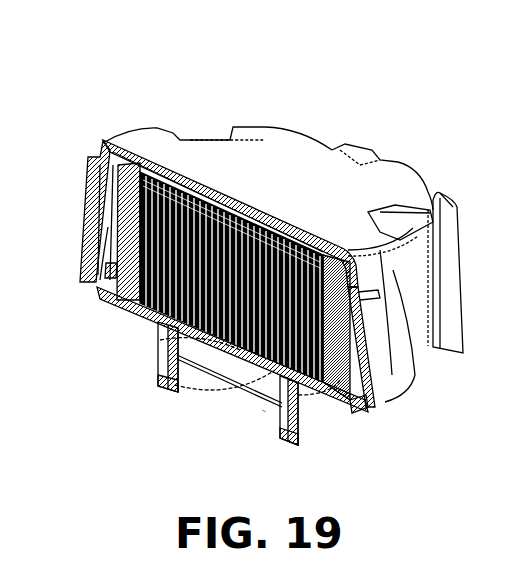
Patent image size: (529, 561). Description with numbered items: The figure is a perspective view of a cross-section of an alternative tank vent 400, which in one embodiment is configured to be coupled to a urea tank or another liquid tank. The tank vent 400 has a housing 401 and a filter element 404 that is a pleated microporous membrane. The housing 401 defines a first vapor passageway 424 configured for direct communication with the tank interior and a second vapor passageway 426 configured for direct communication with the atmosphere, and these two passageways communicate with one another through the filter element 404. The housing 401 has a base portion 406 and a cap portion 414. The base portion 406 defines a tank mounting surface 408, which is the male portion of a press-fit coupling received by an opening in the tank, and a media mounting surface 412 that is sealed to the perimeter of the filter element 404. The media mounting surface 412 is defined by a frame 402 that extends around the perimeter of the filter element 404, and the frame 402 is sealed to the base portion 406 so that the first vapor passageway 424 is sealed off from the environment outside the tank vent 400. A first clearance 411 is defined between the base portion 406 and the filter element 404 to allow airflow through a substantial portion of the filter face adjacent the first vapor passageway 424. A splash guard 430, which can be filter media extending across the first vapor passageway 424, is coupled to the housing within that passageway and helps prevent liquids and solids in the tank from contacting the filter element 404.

The tank vent 400 is at (198, 42).
The housing 401 is at (428, 192).
The frame 402 is at (355, 333).
The filter element 404 is at (278, 218).
The base portion 406 is at (160, 337).
The tank mounting surface 408 is at (305, 412).
The first clearance 411 is at (200, 323).
The media mounting surface 412 is at (185, 175).
The cap portion 414 is at (335, 185).
The first vapor passageway 424 is at (264, 408).
The second vapor passageway 426 is at (100, 300).
The splash guard 430 is at (248, 373).